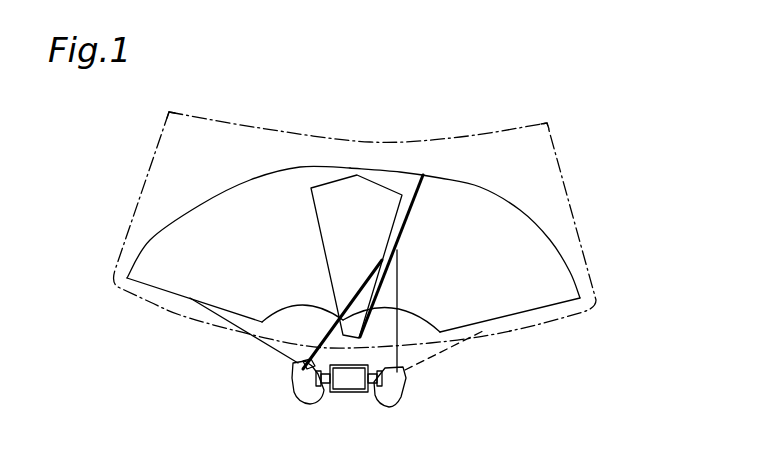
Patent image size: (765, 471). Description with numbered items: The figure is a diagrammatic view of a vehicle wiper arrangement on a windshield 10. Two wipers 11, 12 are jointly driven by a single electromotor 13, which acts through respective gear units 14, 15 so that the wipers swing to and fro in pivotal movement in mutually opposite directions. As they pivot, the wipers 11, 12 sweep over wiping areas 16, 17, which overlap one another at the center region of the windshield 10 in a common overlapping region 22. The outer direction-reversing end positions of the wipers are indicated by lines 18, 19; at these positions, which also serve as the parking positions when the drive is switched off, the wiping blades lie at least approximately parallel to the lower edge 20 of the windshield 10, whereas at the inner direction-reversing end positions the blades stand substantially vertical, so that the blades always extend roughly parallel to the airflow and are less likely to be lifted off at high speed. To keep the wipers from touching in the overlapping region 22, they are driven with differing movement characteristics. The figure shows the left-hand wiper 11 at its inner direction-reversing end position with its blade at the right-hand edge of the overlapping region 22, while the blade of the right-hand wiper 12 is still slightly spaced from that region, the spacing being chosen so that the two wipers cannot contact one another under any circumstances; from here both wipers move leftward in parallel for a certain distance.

The windshield 10 is at (207, 132).
The wiper 11 is at (353, 296).
The wiper 12 is at (398, 285).
The electromotor 13 is at (357, 378).
The gear unit 14 is at (310, 383).
The gear unit 15 is at (393, 390).
The wiping area 16 is at (238, 244).
The wiping area 17 is at (461, 250).
The line 18 is at (170, 293).
The line 19 is at (547, 308).
The lower edge 20 is at (508, 330).
The overlapping region 22 is at (335, 200).